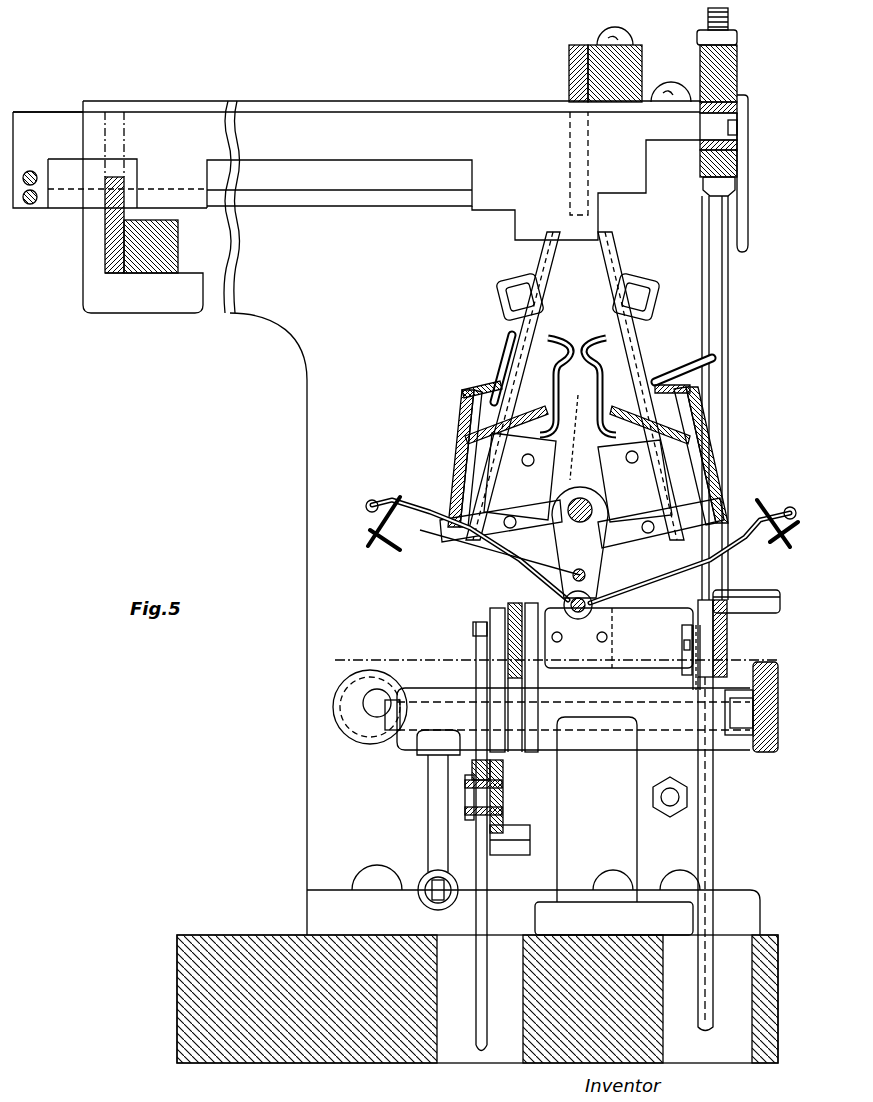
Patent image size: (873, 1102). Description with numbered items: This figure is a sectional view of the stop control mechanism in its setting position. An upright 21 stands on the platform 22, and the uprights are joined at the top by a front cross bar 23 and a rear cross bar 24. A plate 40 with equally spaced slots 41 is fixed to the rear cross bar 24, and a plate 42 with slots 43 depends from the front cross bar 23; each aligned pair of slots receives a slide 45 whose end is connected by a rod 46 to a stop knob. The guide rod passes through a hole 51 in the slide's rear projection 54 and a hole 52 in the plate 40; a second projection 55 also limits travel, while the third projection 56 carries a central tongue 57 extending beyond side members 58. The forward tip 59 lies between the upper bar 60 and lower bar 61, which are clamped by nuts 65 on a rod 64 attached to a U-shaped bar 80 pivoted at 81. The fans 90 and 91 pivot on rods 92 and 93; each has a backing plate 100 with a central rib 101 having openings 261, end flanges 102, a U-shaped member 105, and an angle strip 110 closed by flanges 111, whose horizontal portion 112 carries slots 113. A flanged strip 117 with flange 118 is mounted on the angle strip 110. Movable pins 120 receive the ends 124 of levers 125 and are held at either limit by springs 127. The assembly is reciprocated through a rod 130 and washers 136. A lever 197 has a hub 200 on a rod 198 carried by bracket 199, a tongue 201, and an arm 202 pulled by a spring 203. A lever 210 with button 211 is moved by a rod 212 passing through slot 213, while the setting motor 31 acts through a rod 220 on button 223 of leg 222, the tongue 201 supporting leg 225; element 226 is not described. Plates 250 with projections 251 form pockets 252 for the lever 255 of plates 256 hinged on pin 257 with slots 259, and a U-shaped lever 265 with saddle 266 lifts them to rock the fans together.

The upright 21 is at (386, 518).
The platform 22 is at (190, 1000).
The front cross bar 23 is at (618, 66).
The rear cross bar 24 is at (150, 262).
The setting motor 31 is at (372, 700).
The plate 40 is at (110, 245).
The slots 41 is at (115, 175).
The plate 42 is at (569, 70).
The slots 43 is at (580, 105).
The slide 45 is at (436, 129).
The rod 46 is at (30, 170).
The hole 51 is at (30, 204).
The hole 52 is at (496, 183).
The projection 54 is at (60, 200).
The second projection 55 is at (260, 183).
The third projection 56 is at (561, 163).
The central tongue 57 is at (543, 211).
The side members 58 is at (586, 190).
The forward tip 59 is at (715, 145).
The upper bar 60 is at (737, 82).
The lower bar 61 is at (737, 165).
The rod 64 is at (722, 288).
The nuts 65 is at (725, 35).
The U-shaped bar 80 is at (761, 721).
The pivot 81 is at (737, 68).
The fan 90 is at (655, 360).
The fan 91 is at (458, 405).
The rod 92 is at (627, 485).
The rod 93 is at (524, 500).
The backing plate 100 is at (615, 310).
The central rib 101 is at (583, 360).
The flange 102 is at (578, 477).
The U-shaped member 105 is at (500, 296).
The angle strip 110 is at (745, 484).
The flanges 111 is at (582, 511).
The horizontal portion 112 is at (450, 470).
The slots 113 is at (455, 490).
The flanged strip 117 is at (460, 415).
The flange 118 is at (485, 385).
The movable pins 120 is at (548, 265).
The lever ends 124 is at (530, 540).
The lever 125 is at (535, 553).
The springs 127 is at (508, 345).
The rod 130 is at (579, 578).
The washers 136 is at (582, 522).
The lever 197 is at (445, 636).
The rod 198 is at (390, 720).
The bracket 199 is at (614, 826).
The hub 200 is at (420, 750).
The tongue 201 is at (505, 850).
The arm 202 is at (428, 806).
The spring 203 is at (420, 898).
The lever 210 is at (500, 720).
The button 211 is at (470, 812).
The rod 212 is at (487, 1050).
The slot 213 is at (440, 1050).
The rod 220 is at (714, 826).
The leg 222 is at (727, 645).
The button 223 is at (682, 645).
The leg 225 is at (473, 630).
The bracket arm 226 is at (746, 590).
The plate 250 is at (452, 440).
The right angular projection 251 is at (372, 500).
The pocket 252 is at (559, 523).
The lever 255 is at (420, 570).
The plates 256 is at (710, 560).
The pin 257 is at (633, 612).
The slots 259 is at (755, 560).
The openings 261 is at (625, 380).
The U-shaped lever 265 is at (450, 652).
The saddle 266 is at (557, 638).